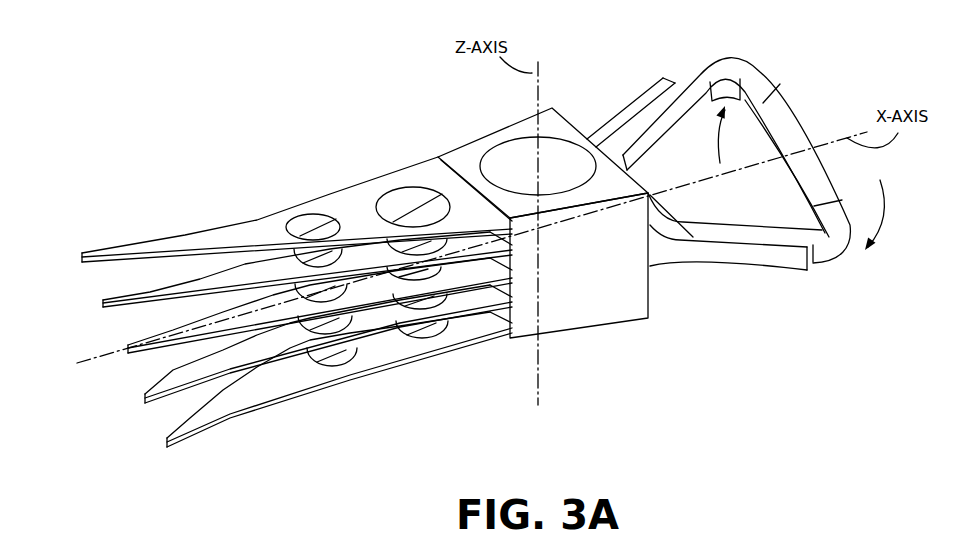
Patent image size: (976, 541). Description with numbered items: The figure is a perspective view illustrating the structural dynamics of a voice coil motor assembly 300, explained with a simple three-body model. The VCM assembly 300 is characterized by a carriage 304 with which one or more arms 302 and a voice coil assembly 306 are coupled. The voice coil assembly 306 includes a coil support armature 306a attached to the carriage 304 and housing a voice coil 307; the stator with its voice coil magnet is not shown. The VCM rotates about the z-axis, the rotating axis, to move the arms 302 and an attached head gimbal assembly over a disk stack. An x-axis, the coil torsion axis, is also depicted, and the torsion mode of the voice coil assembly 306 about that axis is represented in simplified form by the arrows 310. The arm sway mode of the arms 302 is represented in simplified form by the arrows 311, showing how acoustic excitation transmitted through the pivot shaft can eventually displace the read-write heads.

The voice coil motor assembly 300 is at (345, 82).
The arms 302 is at (120, 462).
The carriage 304 is at (507, 132).
The voice coil assembly 306 is at (755, 303).
The coil support armature 306a is at (630, 120).
The voice coil 307 is at (745, 65).
The arrows 310 is at (877, 213).
The arrows 311 is at (135, 298).